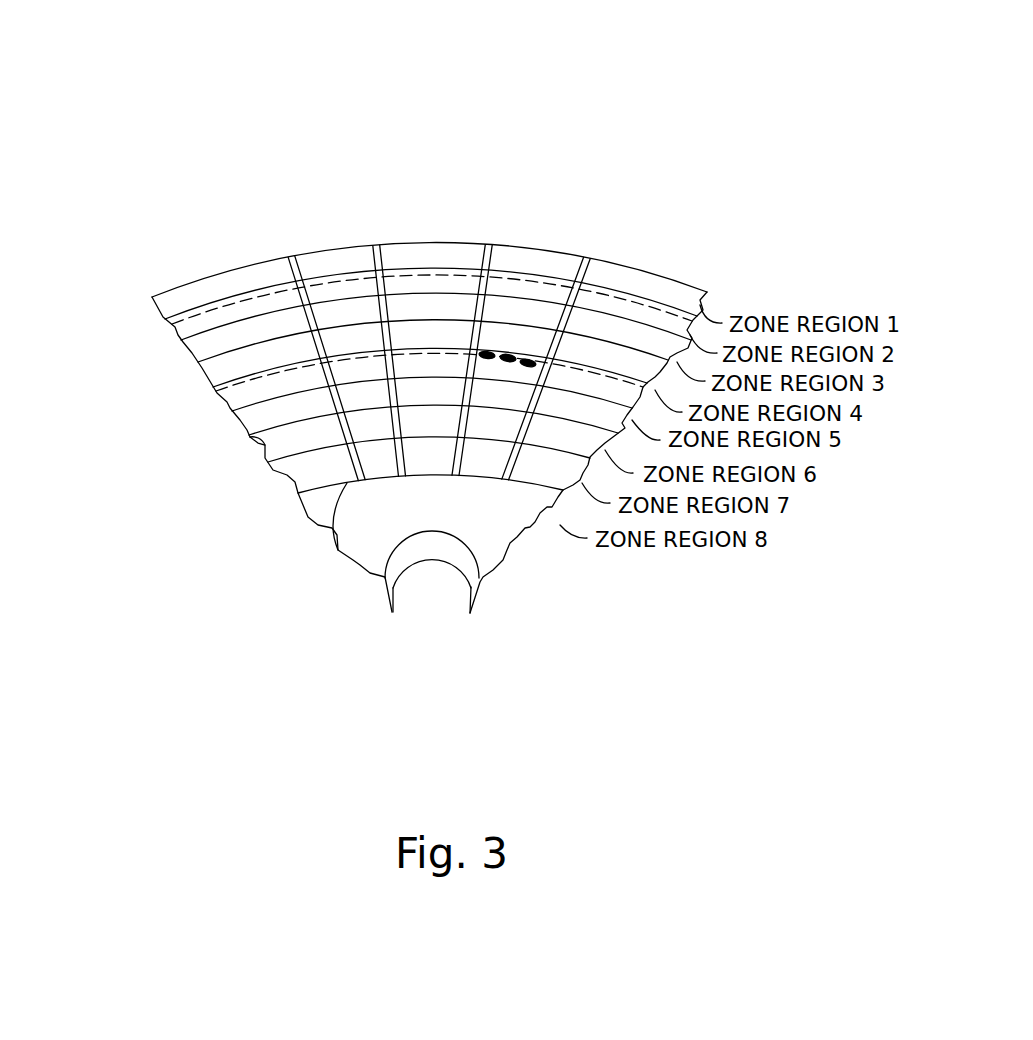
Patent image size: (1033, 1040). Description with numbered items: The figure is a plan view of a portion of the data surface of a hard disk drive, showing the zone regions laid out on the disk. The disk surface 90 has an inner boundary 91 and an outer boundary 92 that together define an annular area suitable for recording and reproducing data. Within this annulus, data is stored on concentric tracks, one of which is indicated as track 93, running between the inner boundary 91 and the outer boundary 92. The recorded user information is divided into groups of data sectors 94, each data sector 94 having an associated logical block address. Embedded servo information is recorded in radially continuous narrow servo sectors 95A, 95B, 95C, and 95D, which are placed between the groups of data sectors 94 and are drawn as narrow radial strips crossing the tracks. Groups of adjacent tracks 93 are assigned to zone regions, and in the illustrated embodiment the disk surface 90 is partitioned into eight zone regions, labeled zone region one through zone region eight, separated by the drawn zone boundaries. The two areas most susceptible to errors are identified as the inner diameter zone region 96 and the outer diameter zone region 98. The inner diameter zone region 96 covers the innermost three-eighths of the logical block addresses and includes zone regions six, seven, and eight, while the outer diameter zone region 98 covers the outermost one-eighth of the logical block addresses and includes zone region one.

The disk surface 90 is at (192, 30).
The inner boundary 91 is at (335, 530).
The outer boundary 92 is at (433, 243).
The data track 93 is at (203, 316).
The data sector 94 is at (528, 382).
The servo sector 95A is at (290, 252).
The servo sector 95B is at (376, 244).
The servo sector 95C is at (491, 243).
The servo sector 95D is at (590, 256).
The inner diameter zone region 96 is at (318, 524).
The outer diameter zone region 98 is at (240, 276).